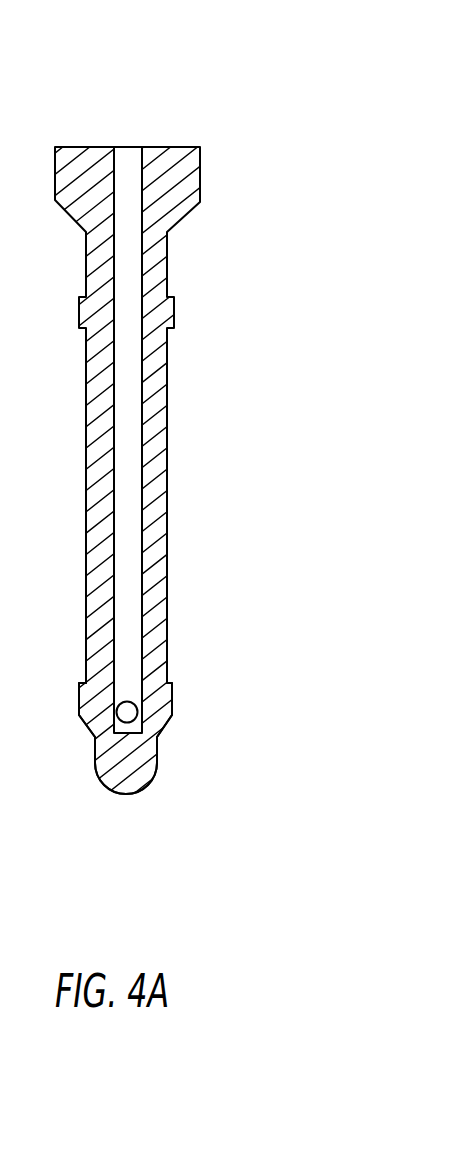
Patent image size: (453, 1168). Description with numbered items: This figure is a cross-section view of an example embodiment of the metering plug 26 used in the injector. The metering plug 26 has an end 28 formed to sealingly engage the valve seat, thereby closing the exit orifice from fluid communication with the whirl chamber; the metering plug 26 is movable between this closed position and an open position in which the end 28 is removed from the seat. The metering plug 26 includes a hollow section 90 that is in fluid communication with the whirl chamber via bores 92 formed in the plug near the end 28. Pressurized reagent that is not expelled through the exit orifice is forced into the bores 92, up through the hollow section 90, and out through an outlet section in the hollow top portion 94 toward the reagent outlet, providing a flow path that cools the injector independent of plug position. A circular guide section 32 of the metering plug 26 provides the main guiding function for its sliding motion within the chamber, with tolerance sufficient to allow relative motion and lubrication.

The metering plug 26 is at (201, 449).
The end 28 is at (128, 773).
The circular guide section 32 is at (165, 440).
The hollow section 90 is at (133, 285).
The bores 92 is at (167, 688).
The hollow top portion 94 is at (128, 147).